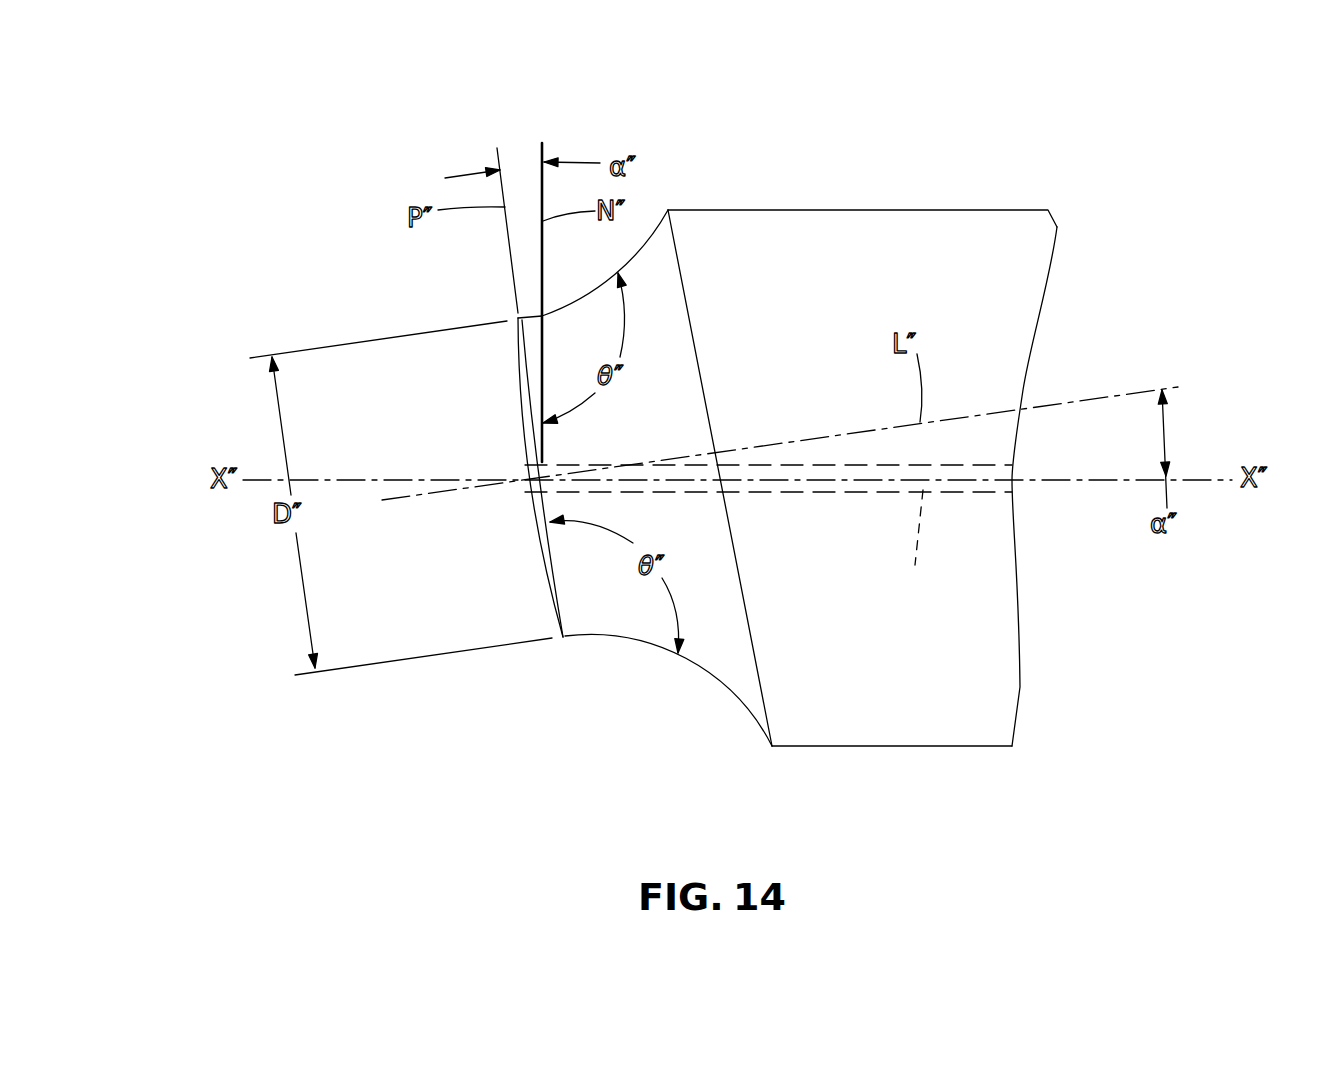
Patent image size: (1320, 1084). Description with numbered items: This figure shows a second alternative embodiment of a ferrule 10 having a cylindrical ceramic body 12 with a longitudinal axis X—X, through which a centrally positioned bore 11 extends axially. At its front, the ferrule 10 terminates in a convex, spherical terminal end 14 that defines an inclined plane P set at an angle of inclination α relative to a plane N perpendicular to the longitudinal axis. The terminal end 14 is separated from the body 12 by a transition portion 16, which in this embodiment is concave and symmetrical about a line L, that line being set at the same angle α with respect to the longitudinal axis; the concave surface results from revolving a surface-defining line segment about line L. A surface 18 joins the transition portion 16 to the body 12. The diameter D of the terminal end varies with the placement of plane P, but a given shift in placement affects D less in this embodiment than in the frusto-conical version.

The ferrule 10 is at (842, 404).
The bore 11 is at (916, 545).
The cylindrical ceramic body 12 is at (1022, 687).
The terminal end 14 is at (540, 560).
The transition portion 16 is at (645, 308).
The tapered side surface 18 is at (750, 620).